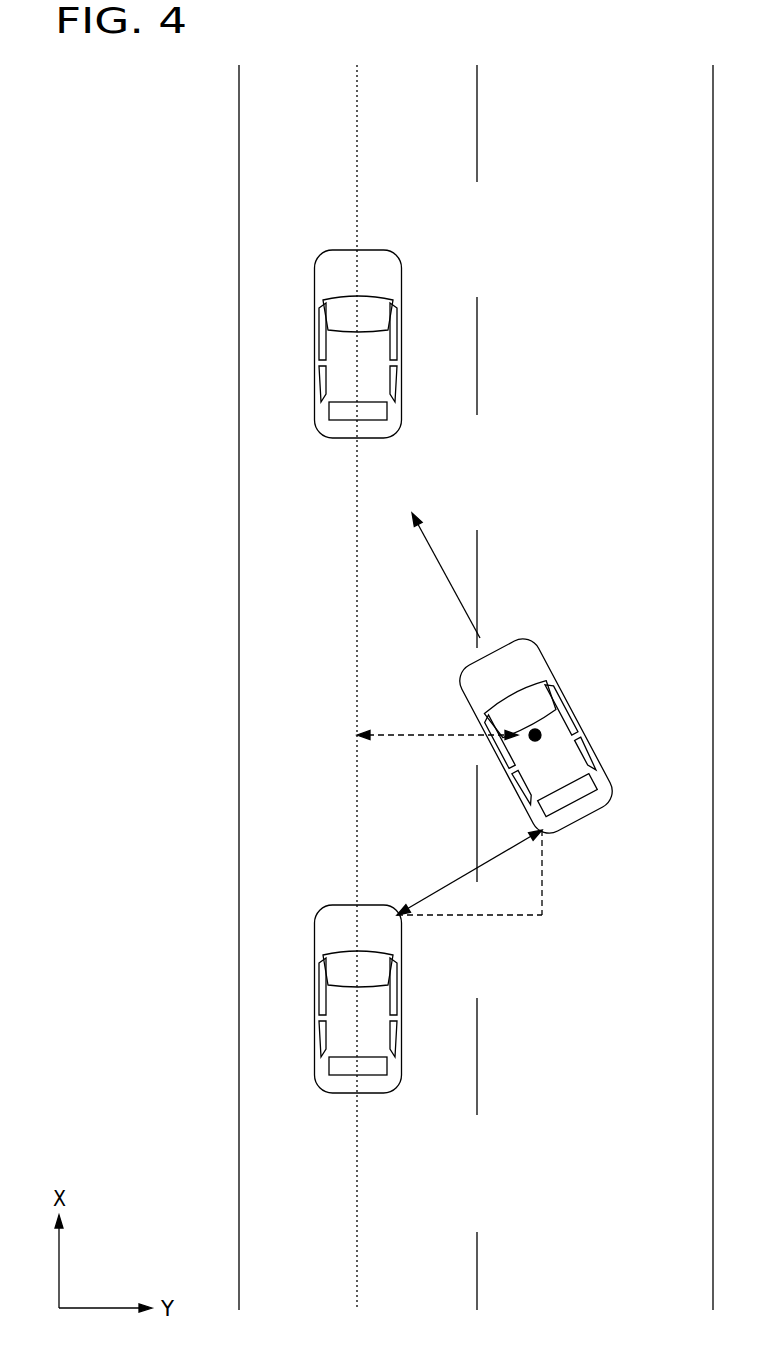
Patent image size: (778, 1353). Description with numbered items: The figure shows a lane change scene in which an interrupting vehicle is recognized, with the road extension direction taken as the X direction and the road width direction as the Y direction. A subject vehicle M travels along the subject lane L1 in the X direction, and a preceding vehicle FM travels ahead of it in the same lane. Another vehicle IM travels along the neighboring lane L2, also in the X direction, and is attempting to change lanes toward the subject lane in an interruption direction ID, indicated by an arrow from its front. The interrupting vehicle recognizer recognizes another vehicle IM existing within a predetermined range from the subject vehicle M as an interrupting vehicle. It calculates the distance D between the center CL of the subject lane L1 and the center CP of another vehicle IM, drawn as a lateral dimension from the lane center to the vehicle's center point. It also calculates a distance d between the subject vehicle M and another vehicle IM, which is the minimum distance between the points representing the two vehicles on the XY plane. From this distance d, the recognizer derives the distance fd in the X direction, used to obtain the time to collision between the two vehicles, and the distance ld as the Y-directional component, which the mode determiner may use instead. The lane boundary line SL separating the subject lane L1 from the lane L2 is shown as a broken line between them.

The preceding vehicle FM is at (403, 340).
The subject vehicle M is at (403, 1000).
The another vehicle IM is at (590, 737).
The center of another vehicle CP is at (540, 731).
The interruption direction ID is at (440, 568).
The distance between center of subject lane and center of another vehicle D is at (432, 739).
The distance between subject vehicle and another vehicle d is at (445, 884).
The distance in the X direction fd is at (544, 870).
The distance in the Y direction ld is at (515, 918).
The center of the subject lane CL is at (239, 1091).
The lane boundary line between lanes L1 and L2 SL is at (478, 1090).
The subject lane L1 is at (430, 1312).
The lane L2 is at (610, 1312).